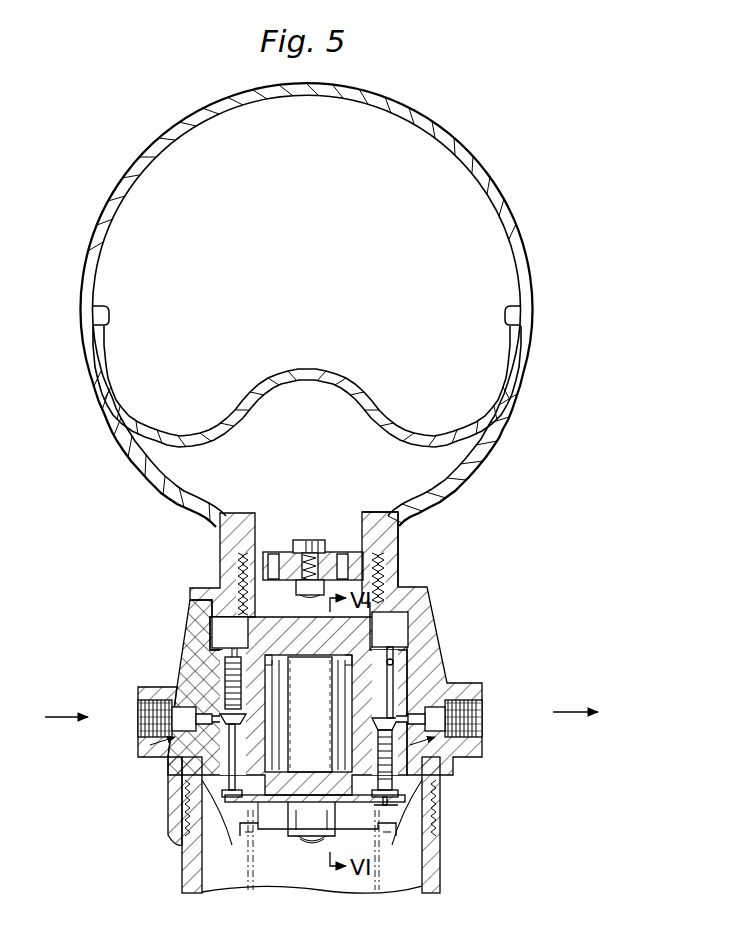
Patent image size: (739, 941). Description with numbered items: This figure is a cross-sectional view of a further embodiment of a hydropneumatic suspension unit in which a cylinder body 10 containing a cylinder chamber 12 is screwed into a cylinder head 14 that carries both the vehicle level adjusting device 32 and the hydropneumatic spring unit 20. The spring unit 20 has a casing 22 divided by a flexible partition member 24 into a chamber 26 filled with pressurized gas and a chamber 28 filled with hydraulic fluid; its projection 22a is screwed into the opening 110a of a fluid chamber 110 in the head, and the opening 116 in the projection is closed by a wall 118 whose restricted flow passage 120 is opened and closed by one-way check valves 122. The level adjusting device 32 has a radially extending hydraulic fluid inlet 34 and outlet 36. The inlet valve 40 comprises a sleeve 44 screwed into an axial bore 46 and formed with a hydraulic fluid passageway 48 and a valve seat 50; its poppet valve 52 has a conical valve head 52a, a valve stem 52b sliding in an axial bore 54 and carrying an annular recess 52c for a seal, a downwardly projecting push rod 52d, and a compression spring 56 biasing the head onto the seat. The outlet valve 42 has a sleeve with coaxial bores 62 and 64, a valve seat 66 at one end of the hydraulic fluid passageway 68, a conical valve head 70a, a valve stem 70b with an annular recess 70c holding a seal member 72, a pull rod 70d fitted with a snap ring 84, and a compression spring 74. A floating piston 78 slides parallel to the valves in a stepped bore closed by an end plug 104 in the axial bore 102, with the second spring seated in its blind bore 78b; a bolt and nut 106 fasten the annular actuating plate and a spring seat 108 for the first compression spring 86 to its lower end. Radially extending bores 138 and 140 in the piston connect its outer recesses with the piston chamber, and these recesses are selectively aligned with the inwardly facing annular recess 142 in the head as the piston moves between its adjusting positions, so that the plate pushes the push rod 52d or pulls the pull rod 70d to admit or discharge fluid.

The cylinder body 10 is at (192, 882).
The cylinder chamber 12 is at (440, 871).
The cylinder head 14 is at (432, 585).
The hydropneumatic spring unit 20 is at (289, 324).
The casing 22 is at (97, 218).
The projection 22a is at (400, 522).
The flexible partition member 24 is at (373, 405).
The chamber 26 is at (321, 306).
The chamber 28 is at (326, 461).
The vehicle level adjusting device 32 is at (222, 849).
The hydraulic fluid inlet 34 is at (140, 731).
The hydraulic fluid outlet 36 is at (481, 722).
The hydraulic fluid inlet valve 40 is at (166, 754).
The hydraulic fluid outlet valve 42 is at (400, 750).
The sleeve 44 is at (200, 792).
The axial bore 46 is at (222, 757).
The hydraulic fluid passageway 48 is at (216, 771).
The valve seat 50 is at (176, 677).
The poppet valve 52 is at (182, 846).
The conical valve head 52a is at (218, 692).
The valve stem 52b is at (210, 662).
The annular recess 52c is at (216, 670).
The push rod 52d is at (184, 831).
The axial bore 54 is at (224, 700).
The compression spring 56 is at (232, 628).
The axial bore 62 is at (416, 762).
The axial bore 64 is at (436, 797).
The valve seat 66 is at (414, 715).
The hydraulic fluid passageway 68 is at (398, 668).
The conical valve head 70a is at (402, 696).
The valve stem 70b is at (432, 705).
The annular recess 70c is at (446, 720).
The pull rod 70d is at (440, 822).
The seal member 72 is at (446, 729).
The compression spring 74 is at (441, 781).
The floating piston 78 is at (385, 824).
The blind bore 78b is at (276, 712).
The snap ring 84 is at (440, 842).
The first compression spring 86 is at (392, 892).
The axial bore 102 is at (420, 662).
The end plug 104 is at (249, 630).
The bolt and nut 106 is at (314, 824).
The spring seat 108 is at (265, 834).
The fluid chamber 110 is at (393, 650).
The opening 110a is at (238, 572).
The opening 116 is at (222, 535).
The wall 118 is at (382, 568).
The restricted flow passage 120 is at (306, 537).
The one-way check valves 122 is at (343, 553).
The radially extending bore 138 is at (250, 803).
The radially extending bore 140 is at (262, 815).
The inwardly facing annular recess 142 is at (286, 758).